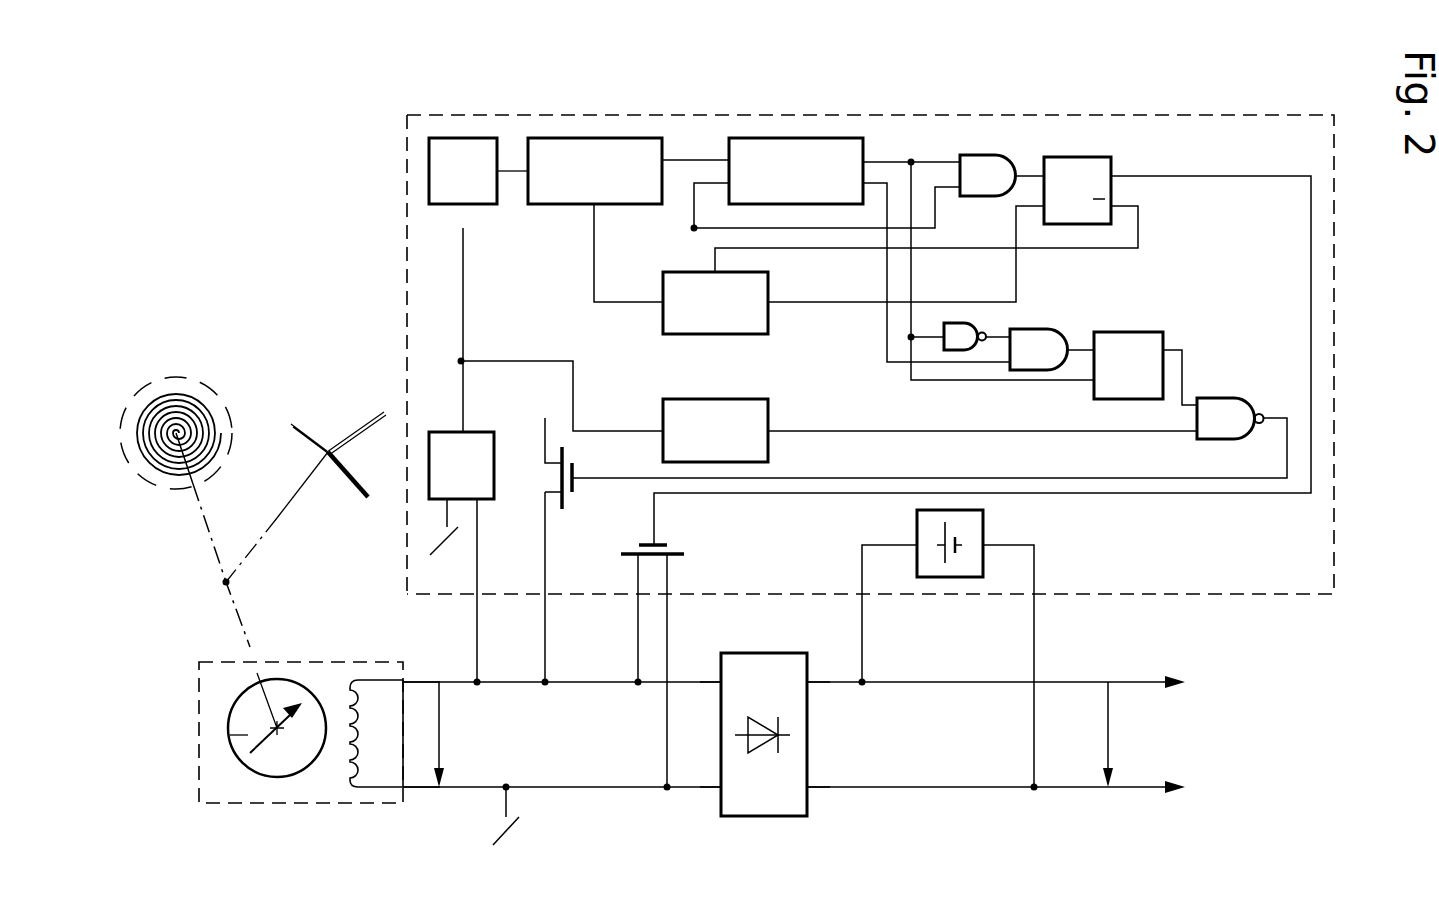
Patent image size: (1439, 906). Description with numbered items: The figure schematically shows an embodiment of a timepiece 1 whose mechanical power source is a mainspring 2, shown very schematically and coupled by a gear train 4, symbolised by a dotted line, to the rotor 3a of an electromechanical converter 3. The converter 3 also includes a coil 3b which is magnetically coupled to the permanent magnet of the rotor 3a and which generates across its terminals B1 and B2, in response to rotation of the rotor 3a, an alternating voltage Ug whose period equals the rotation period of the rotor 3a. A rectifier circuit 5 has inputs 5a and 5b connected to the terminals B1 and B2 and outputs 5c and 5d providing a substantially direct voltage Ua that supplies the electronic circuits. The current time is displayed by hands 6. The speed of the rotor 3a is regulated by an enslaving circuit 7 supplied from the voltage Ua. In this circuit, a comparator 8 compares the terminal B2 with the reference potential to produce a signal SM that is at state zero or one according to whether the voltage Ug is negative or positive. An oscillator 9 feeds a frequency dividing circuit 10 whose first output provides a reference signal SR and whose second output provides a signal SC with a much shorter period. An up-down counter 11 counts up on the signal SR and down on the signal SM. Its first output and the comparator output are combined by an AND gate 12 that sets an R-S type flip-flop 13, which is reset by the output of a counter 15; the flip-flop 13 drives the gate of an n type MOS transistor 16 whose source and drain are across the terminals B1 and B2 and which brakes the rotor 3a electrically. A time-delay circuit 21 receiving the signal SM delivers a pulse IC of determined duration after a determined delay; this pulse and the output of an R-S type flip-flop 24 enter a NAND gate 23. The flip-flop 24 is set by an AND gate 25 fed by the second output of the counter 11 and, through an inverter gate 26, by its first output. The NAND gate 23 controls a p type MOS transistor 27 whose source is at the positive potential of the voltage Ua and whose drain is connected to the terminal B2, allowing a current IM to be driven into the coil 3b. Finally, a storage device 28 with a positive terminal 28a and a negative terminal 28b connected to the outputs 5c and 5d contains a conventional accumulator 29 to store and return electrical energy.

The timepiece 1 is at (352, 173).
The mainspring 2 is at (186, 380).
The electromechanical converter 3 is at (330, 660).
The rotor 3a is at (230, 735).
The coil 3b is at (334, 724).
The gear train 4 is at (238, 627).
The rectifier circuit 5 is at (768, 724).
The rectifier input 5a is at (722, 789).
The rectifier input 5b is at (721, 680).
The rectifier output 5c is at (807, 789).
The rectifier output 5d is at (807, 680).
The hands 6 is at (330, 420).
The enslaving circuit 7 is at (407, 230).
The comparator 8 is at (447, 448).
The oscillator 9 is at (458, 152).
The frequency dividing circuit 10 is at (588, 152).
The up-down counter 11 is at (796, 152).
The AND gate 12 is at (980, 163).
The R-S type flip-flop 13 is at (1076, 165).
The counter 15 is at (675, 283).
The n type MOS transistor 16 is at (672, 542).
The time-delay circuit 21 is at (712, 411).
The NAND gate 23 is at (1223, 408).
The R-S type flip-flop 24 is at (1126, 342).
The AND gate 25 is at (1048, 340).
The inverter gate 26 is at (957, 330).
The p type MOS transistor 27 is at (579, 491).
The storage device 28 is at (948, 614).
The positive terminal 28a is at (912, 545).
The negative terminal 28b is at (983, 541).
The accumulator 29 is at (935, 562).
The reference signal SR is at (695, 158).
The signal SC is at (594, 255).
The signal SM is at (463, 412).
The pulse IC is at (857, 431).
The braking current signal IM is at (545, 545).
The alternating voltage Ug is at (440, 710).
The direct voltage Ua is at (1110, 720).
The coil terminal B1 is at (403, 790).
The coil terminal B2 is at (408, 683).